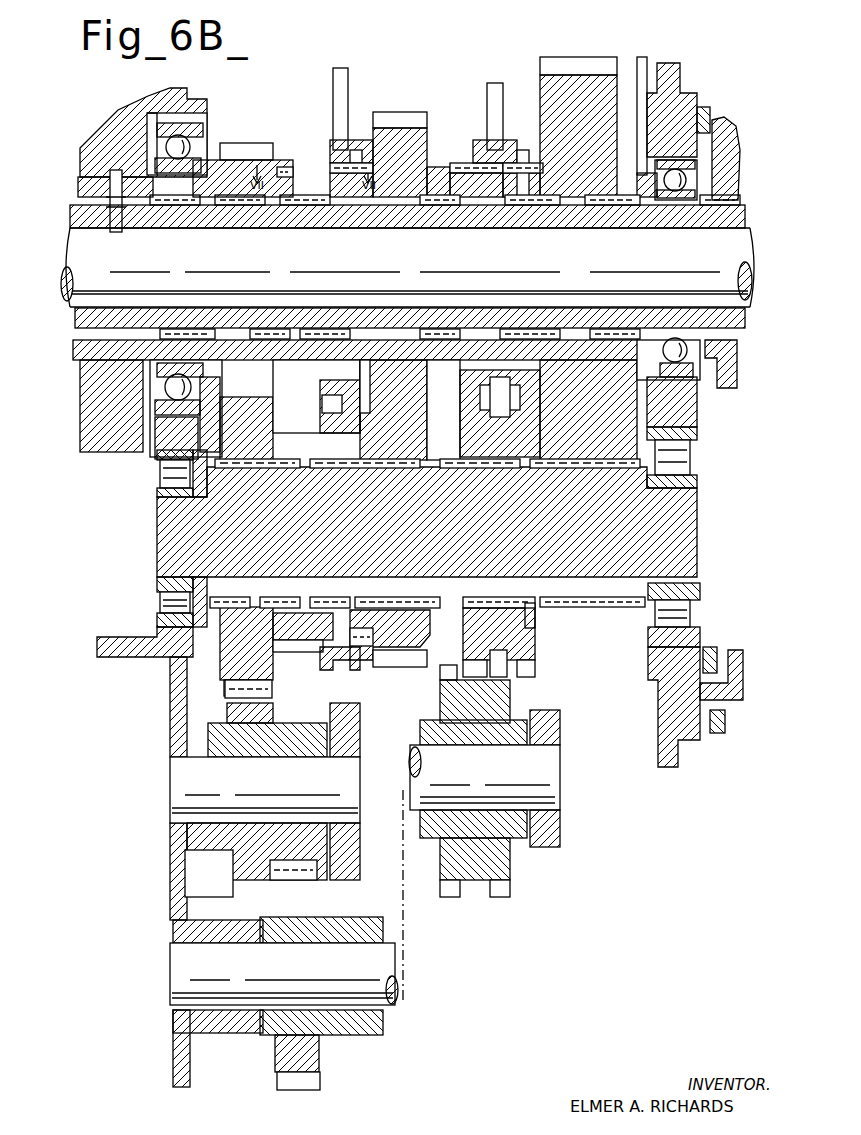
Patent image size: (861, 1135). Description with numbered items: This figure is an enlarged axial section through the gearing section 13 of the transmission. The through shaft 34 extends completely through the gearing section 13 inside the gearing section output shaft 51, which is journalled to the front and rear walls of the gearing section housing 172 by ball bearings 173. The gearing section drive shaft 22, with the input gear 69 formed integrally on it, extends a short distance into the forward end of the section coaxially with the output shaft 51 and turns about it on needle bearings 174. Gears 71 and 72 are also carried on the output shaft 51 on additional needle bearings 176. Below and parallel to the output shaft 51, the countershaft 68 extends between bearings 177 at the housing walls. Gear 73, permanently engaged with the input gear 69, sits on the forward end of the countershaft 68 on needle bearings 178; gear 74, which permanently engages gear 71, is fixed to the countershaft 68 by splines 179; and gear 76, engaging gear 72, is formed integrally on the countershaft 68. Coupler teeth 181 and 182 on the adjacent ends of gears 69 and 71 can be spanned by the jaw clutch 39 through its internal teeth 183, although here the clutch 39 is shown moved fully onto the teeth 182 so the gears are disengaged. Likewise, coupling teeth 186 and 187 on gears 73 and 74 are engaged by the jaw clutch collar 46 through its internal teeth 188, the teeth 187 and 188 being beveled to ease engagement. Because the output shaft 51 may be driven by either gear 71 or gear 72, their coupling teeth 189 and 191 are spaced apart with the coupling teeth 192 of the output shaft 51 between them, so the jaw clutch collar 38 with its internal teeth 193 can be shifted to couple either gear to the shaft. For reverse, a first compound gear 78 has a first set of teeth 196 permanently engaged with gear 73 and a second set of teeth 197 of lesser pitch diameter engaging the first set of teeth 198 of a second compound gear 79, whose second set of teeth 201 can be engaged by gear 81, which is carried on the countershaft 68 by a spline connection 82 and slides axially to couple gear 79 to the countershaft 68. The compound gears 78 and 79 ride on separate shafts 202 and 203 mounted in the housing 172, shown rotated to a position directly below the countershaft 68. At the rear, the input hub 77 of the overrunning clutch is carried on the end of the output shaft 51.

The gearing section 13 is at (496, 38).
The gearing section drive shaft 22 is at (78, 186).
The through shaft 34 is at (322, 255).
The jaw clutch collar 38 is at (503, 145).
The jaw clutch 39 is at (333, 122).
The jaw clutch collar 46 is at (358, 672).
The gearing section output shaft 51 is at (487, 226).
The countershaft 68 is at (435, 534).
The input gear 69 is at (222, 152).
The gear 71 is at (398, 114).
The gear 72 is at (568, 62).
The gear 73 is at (225, 668).
The gear 74 is at (390, 640).
The gear 76 is at (607, 603).
The input hub 77 is at (740, 150).
The first compound gear 78 is at (262, 744).
The second compound gear 79 is at (403, 842).
The gear 81 is at (534, 642).
The spline connection 82 is at (530, 620).
The gearing section housing 172 is at (683, 86).
The ball bearings 173 is at (205, 130).
The needle bearings 174 is at (166, 226).
The needle bearings 176 is at (437, 206).
The bearings 177 is at (157, 475).
The needle bearings 178 is at (243, 468).
The splines 179 is at (402, 468).
The coupler teeth 181 is at (288, 165).
The coupler teeth 182 is at (372, 172).
The internal teeth 183 is at (358, 150).
The coupling teeth 186 is at (300, 640).
The coupling teeth 187 is at (374, 645).
The internal teeth 188 is at (325, 653).
The coupling teeth 189 is at (437, 172).
The coupling teeth 191 is at (528, 160).
The coupling teeth 192 is at (462, 170).
The internal teeth 193 is at (529, 170).
The first set of teeth 196 is at (240, 894).
The second set of teeth 197 is at (318, 876).
The first set of teeth 198 is at (318, 1085).
The second set of teeth 201 is at (510, 892).
The shaft 202 is at (278, 788).
The shaft 203 is at (302, 973).